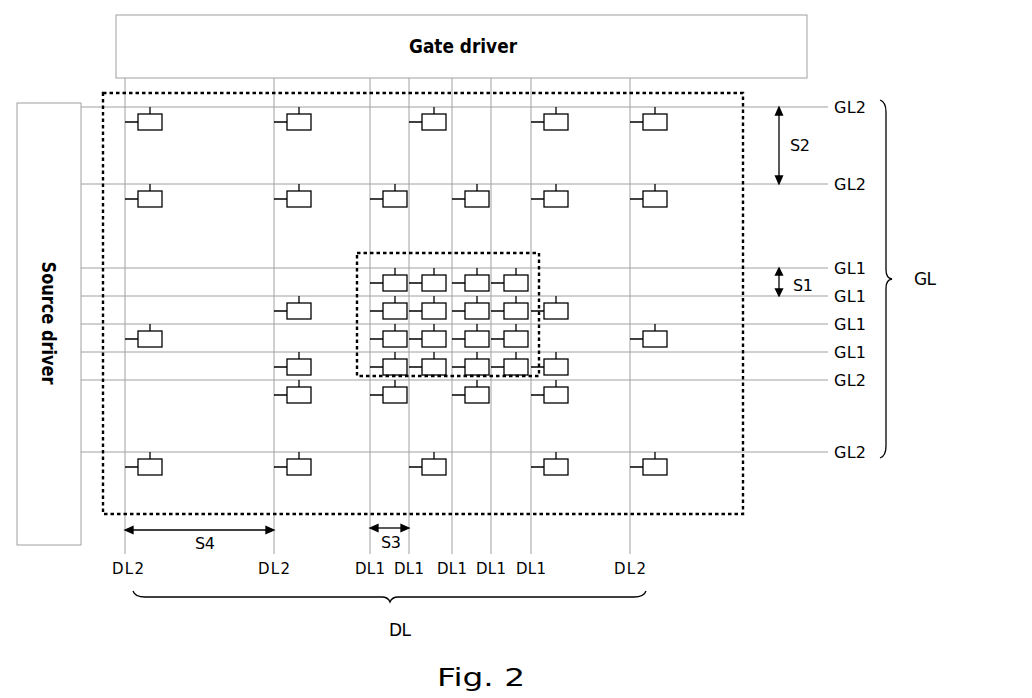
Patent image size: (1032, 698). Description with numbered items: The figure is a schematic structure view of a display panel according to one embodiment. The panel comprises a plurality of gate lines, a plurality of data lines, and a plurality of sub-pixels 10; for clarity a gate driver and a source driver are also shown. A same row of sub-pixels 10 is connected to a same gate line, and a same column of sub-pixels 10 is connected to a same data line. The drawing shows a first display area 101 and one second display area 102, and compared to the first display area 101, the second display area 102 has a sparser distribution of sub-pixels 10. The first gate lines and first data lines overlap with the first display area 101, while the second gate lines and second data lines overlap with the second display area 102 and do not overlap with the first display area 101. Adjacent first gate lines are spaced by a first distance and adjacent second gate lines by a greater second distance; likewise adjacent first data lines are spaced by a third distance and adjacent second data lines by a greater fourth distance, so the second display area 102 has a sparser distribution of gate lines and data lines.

The sub-pixel 10 is at (396, 291).
The first display area 101 is at (510, 252).
The second display area 102 is at (705, 248).